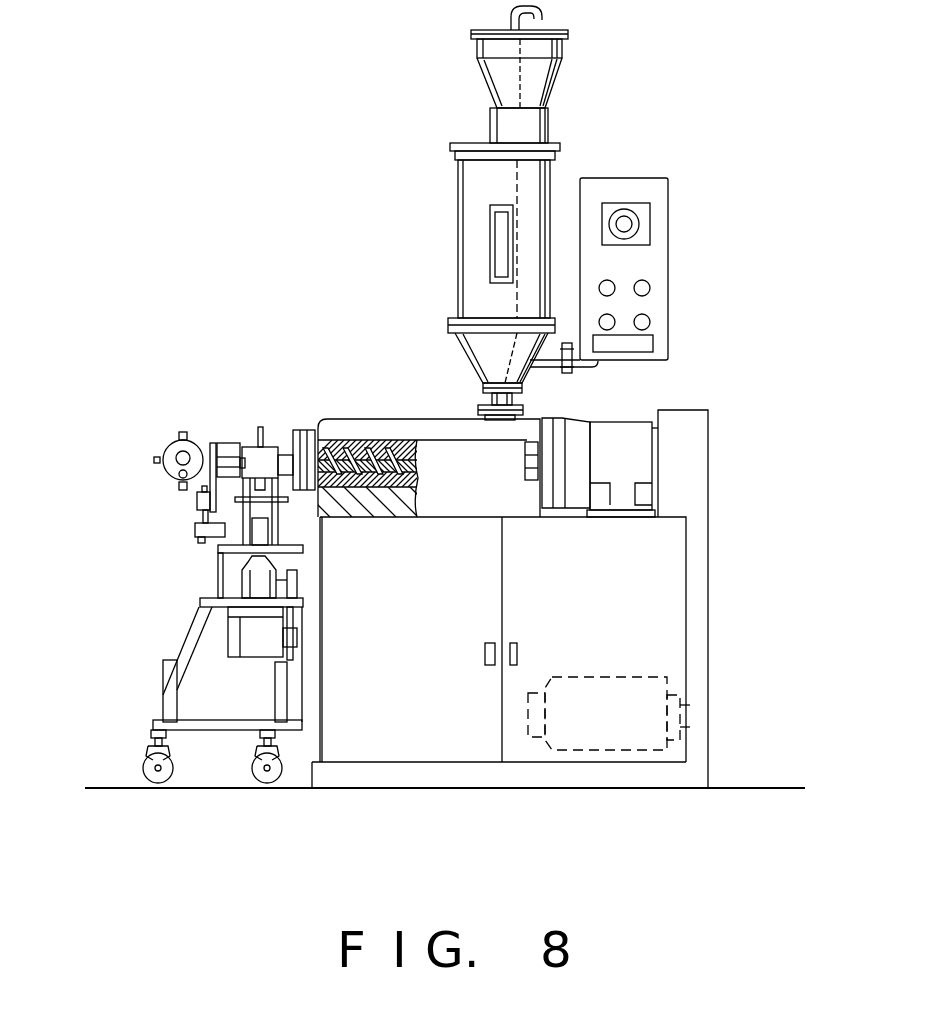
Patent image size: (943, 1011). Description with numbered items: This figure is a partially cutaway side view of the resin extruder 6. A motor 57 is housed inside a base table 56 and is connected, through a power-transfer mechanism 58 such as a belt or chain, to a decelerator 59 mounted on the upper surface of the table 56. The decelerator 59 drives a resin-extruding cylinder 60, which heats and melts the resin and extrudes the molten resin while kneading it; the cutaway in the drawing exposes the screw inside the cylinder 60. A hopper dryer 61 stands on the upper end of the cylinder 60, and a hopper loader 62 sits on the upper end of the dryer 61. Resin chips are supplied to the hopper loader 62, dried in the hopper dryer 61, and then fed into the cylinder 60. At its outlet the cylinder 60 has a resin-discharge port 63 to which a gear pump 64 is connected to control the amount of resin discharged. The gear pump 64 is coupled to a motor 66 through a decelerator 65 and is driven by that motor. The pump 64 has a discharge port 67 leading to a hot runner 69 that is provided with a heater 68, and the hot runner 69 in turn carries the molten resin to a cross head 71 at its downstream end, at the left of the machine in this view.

The resin extruder 6 is at (674, 219).
The base table 56 is at (665, 588).
The motor 57 is at (654, 697).
The power-transfer mechanism 58 is at (708, 636).
The decelerator 59 is at (627, 422).
The resin-extruding cylinder 60 is at (397, 445).
The hopper dryer 61 is at (458, 258).
The hopper loader 62 is at (487, 75).
The resin-discharge port 63 is at (288, 452).
The gear pump 64 is at (250, 448).
The decelerator 65 is at (266, 591).
The motor 66 is at (268, 647).
The discharge port 67 is at (231, 445).
The heater 68 is at (216, 442).
The hot runner 69 is at (205, 473).
The cross head 71 is at (165, 470).